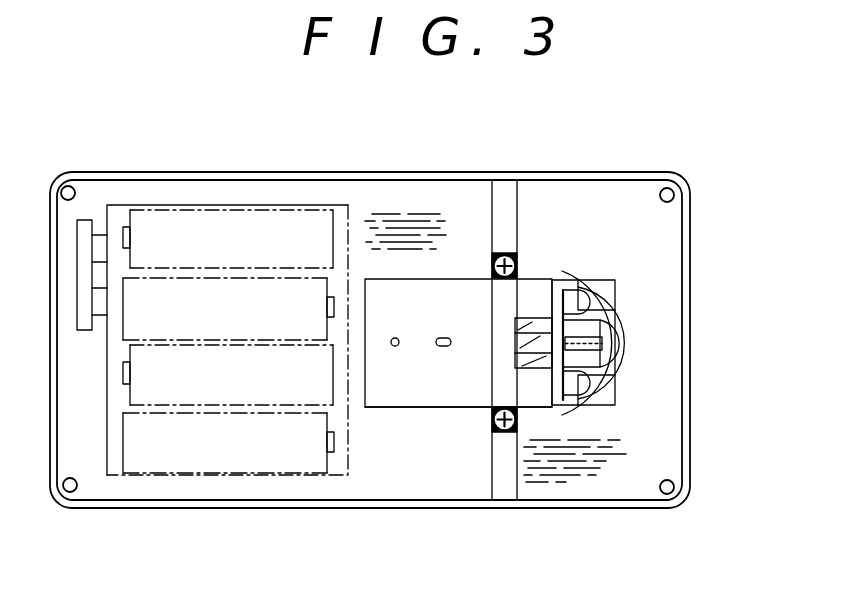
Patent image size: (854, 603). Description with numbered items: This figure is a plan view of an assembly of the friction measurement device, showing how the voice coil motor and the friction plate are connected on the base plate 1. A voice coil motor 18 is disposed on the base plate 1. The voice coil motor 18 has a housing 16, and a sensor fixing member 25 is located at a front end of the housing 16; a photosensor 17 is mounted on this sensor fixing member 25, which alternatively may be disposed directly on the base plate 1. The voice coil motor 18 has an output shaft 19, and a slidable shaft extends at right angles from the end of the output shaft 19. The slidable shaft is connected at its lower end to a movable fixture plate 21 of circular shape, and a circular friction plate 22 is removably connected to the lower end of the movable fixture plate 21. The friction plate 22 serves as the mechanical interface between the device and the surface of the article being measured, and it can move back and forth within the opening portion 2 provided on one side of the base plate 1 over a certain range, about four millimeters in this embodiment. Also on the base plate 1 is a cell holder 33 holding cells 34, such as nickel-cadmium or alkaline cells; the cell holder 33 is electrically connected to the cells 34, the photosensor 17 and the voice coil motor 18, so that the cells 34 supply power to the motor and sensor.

The base plate 1 is at (610, 488).
The opening portion 2 is at (662, 333).
The housing 16 is at (419, 292).
The photosensor 17 is at (632, 323).
The voice coil motor 18 is at (410, 406).
The output shaft 19 is at (532, 348).
The movable fixture plate 21 is at (610, 350).
The friction plate 22 is at (578, 327).
The sensor fixing member 25 is at (528, 290).
The cell holder 33 is at (253, 476).
The cells 34 is at (177, 450).